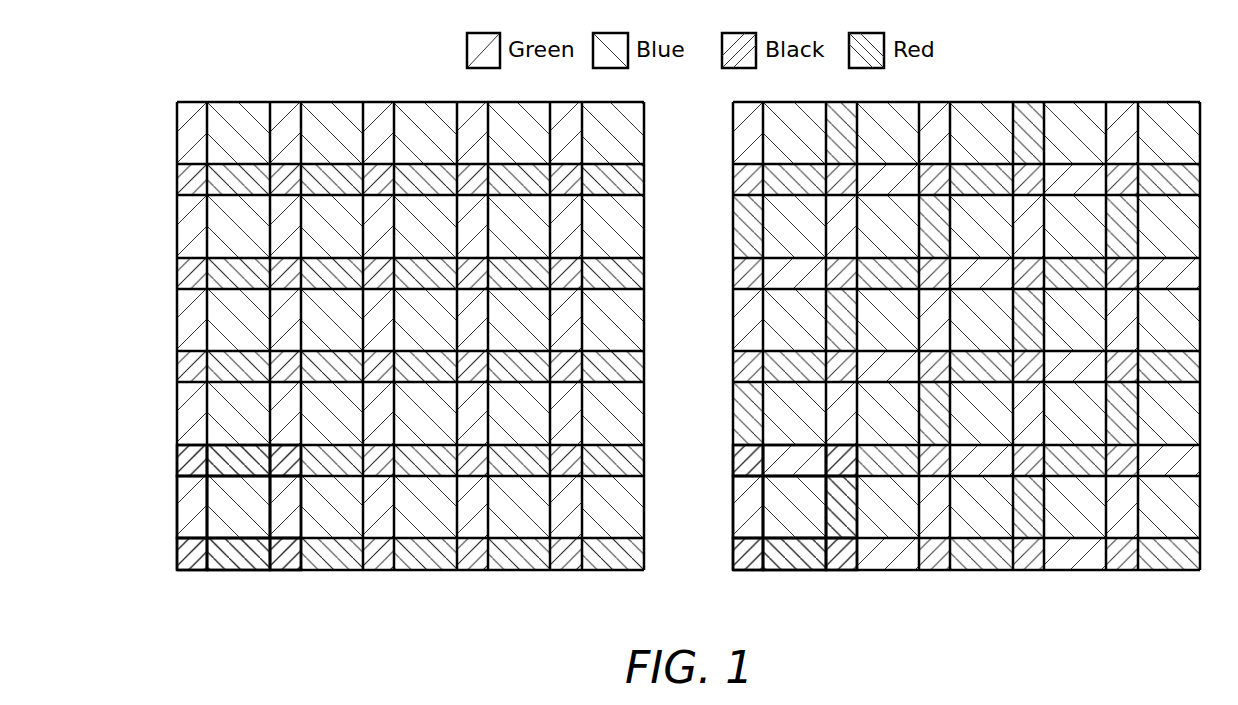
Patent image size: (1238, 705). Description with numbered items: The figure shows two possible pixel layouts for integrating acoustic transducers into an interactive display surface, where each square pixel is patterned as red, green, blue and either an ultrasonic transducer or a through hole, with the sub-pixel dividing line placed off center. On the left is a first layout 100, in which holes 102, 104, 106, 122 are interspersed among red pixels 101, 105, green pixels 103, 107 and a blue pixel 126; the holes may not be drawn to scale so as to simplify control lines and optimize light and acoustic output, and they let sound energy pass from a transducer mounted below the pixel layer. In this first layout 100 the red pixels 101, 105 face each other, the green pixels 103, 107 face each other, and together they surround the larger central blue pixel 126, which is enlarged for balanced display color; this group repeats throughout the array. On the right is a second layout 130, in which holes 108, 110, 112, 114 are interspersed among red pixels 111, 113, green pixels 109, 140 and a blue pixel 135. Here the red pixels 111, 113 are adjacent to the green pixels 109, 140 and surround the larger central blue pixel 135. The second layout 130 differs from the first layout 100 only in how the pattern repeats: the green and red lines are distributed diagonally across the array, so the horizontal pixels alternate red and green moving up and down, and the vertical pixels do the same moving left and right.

The first layout 100 is at (394, 289).
The second layout 130 is at (966, 376).
The hole 122 is at (209, 412).
The red pixel 101 is at (193, 435).
The hole 102 is at (158, 460).
The green pixel 103 is at (158, 507).
The hole 104 is at (158, 554).
The blue pixel 126 is at (216, 549).
The red pixel 105 is at (238, 580).
The hole 106 is at (287, 580).
The green pixel 107 is at (323, 545).
The hole 110 is at (770, 397).
The green pixel 109 is at (754, 426).
The hole 108 is at (715, 460).
The green pixel 140 is at (715, 507).
The hole 114 is at (715, 554).
The blue pixel 135 is at (773, 549).
The red pixel 113 is at (794, 580).
The hole 112 is at (844, 580).
The red pixel 111 is at (878, 545).